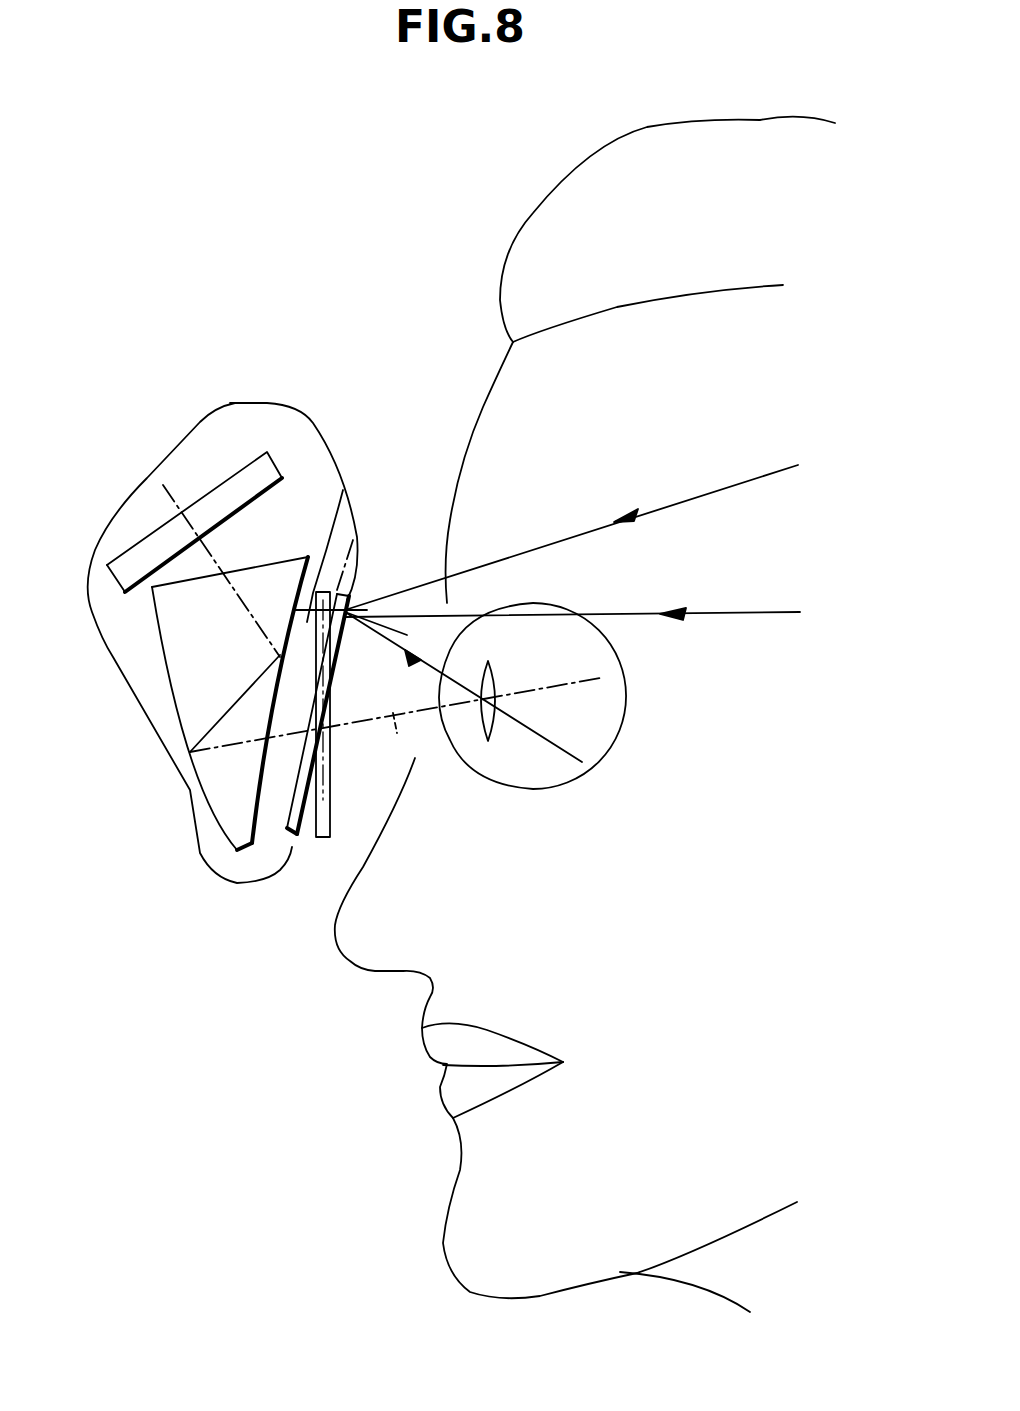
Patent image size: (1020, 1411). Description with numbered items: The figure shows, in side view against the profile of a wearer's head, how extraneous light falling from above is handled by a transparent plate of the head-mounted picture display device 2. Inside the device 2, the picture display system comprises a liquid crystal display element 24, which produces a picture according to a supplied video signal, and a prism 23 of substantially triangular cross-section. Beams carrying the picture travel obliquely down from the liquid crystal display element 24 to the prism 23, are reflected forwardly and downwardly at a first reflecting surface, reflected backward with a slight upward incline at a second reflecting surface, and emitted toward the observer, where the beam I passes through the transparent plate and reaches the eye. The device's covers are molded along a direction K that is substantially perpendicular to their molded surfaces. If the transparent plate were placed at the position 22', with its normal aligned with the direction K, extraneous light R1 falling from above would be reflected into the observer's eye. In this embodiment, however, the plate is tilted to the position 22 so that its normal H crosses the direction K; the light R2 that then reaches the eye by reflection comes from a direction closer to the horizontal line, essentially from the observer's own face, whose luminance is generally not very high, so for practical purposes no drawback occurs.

The head-mounted picture display device 2 is at (152, 457).
The transparent plate 22 is at (309, 777).
The transparent plate position 22' is at (360, 652).
The prism 23 is at (190, 767).
The liquid crystal display element 24 is at (123, 577).
The direction K is at (343, 490).
The normal H is at (394, 602).
The beam I is at (384, 761).
The extraneous light R1 is at (710, 492).
The light R2 is at (735, 613).